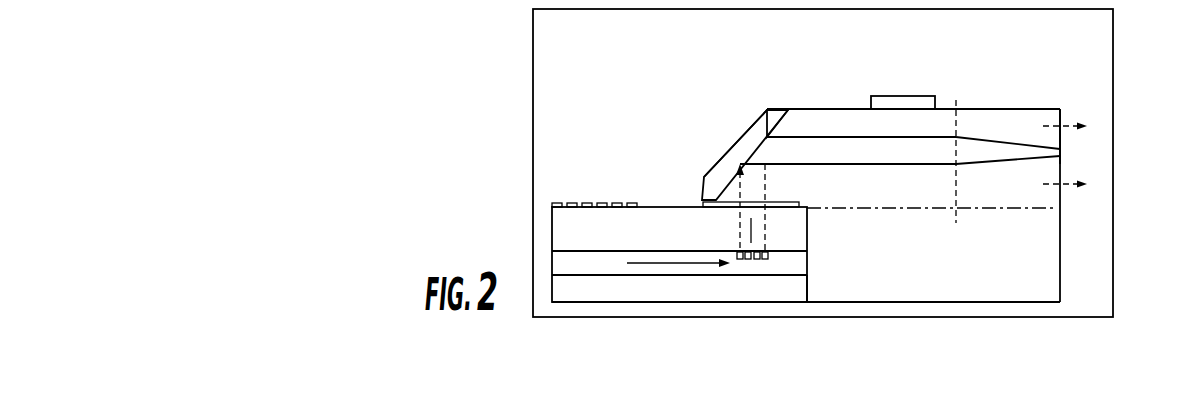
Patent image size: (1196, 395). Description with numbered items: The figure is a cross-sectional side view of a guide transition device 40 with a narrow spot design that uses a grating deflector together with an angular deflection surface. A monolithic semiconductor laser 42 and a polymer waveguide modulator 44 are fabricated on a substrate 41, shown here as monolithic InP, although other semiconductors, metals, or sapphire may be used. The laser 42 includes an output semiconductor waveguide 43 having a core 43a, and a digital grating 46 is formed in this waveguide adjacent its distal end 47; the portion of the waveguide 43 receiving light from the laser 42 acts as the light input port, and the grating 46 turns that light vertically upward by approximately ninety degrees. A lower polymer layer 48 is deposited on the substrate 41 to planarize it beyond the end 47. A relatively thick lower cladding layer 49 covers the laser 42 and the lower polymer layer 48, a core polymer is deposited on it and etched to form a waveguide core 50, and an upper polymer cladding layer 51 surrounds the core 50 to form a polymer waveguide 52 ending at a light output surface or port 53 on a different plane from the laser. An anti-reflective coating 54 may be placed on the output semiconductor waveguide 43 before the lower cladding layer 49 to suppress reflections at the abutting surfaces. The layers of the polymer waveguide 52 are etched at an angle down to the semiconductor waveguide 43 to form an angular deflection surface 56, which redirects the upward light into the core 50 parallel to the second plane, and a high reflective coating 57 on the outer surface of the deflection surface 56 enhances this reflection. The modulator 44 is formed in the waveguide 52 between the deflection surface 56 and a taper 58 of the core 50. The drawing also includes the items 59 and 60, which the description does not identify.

The guide transition device 40 is at (573, 62).
The substrate 41 is at (1047, 302).
The monolithic semiconductor laser 42 is at (559, 172).
The output semiconductor waveguide 43 is at (697, 222).
The core 43a is at (685, 268).
The polymer waveguide modulator 44 is at (955, 68).
The digital grating 46 is at (747, 262).
The distal end 47 is at (792, 290).
The lower polymer layer 48 is at (1025, 243).
The lower cladding layer 49 is at (1045, 195).
The waveguide core 50 is at (820, 145).
The upper polymer cladding layer 51 is at (1010, 118).
The polymer waveguide 52 is at (1067, 89).
The light output surface or port 53 is at (1060, 166).
The anti-reflective coating 54 is at (721, 198).
The angular deflection surface 56 is at (774, 117).
The high reflective coating 57 is at (738, 145).
The taper 58 is at (980, 140).
The output light beam 59 is at (1069, 120).
The alignment marker 60 is at (892, 95).